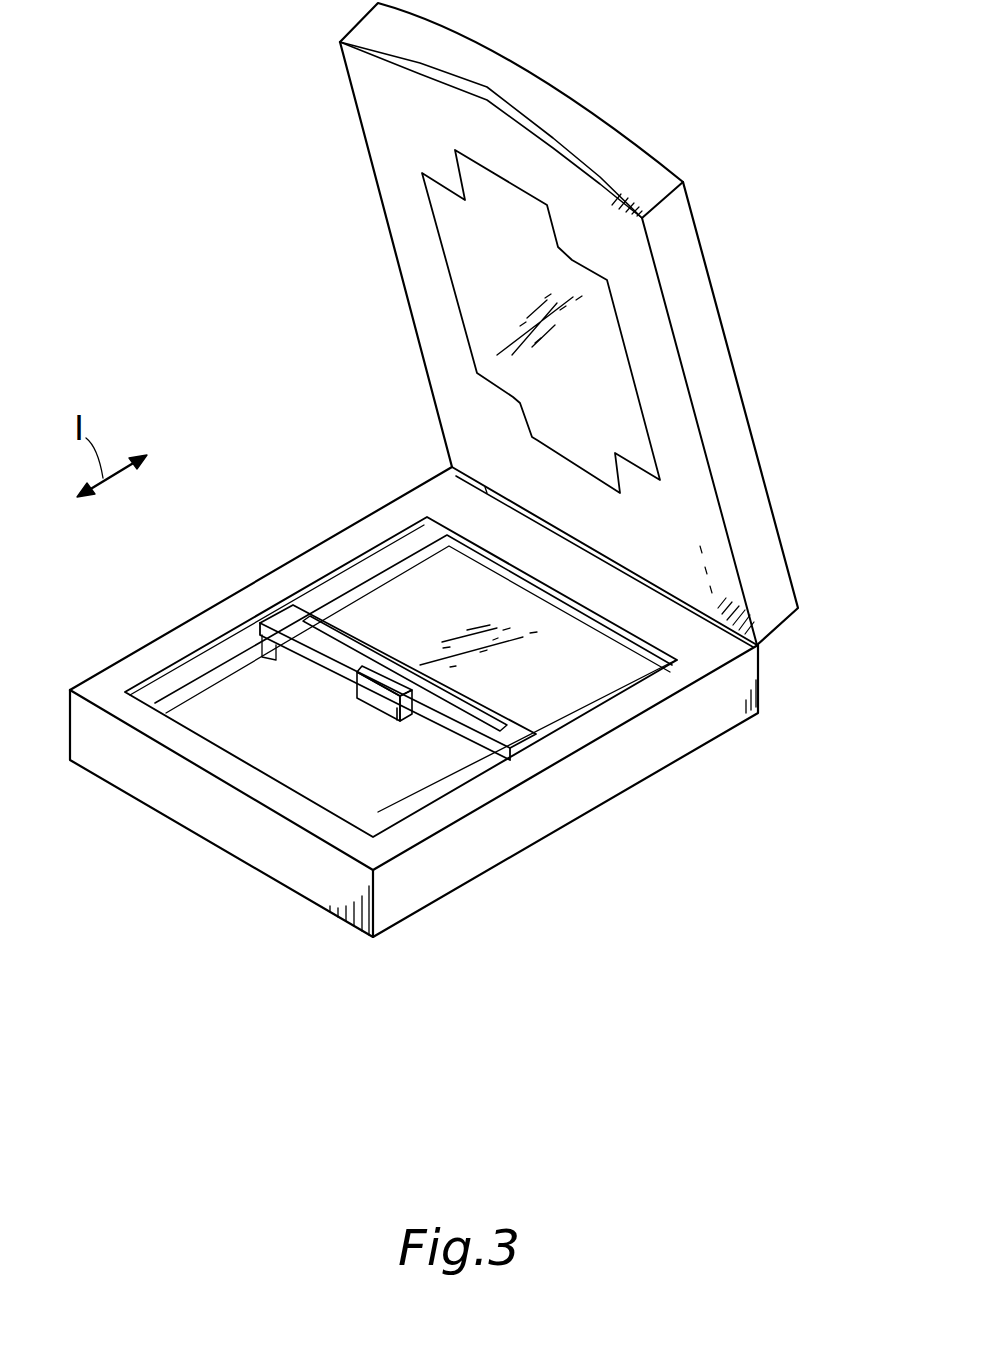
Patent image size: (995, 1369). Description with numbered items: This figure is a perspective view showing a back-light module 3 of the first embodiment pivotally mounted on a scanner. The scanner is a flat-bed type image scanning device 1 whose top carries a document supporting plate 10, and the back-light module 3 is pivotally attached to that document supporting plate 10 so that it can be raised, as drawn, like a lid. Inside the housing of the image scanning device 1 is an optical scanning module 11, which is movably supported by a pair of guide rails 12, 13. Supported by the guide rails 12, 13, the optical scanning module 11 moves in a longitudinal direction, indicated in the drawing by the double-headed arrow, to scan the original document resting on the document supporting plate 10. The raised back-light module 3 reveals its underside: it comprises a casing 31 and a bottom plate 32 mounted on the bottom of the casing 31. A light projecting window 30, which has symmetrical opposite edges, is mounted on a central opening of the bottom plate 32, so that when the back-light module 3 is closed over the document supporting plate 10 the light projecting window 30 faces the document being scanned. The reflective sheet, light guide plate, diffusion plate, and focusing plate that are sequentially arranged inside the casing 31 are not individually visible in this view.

The image scanning device 1 is at (618, 760).
The back-light module 3 is at (588, 325).
The document supporting plate 10 is at (283, 752).
The optical scanning module 11 is at (368, 700).
The guide rail 12 is at (397, 573).
The guide rail 13 is at (455, 777).
The light projecting window 30 is at (477, 323).
The casing 31 is at (717, 377).
The bottom plate 32 is at (687, 467).